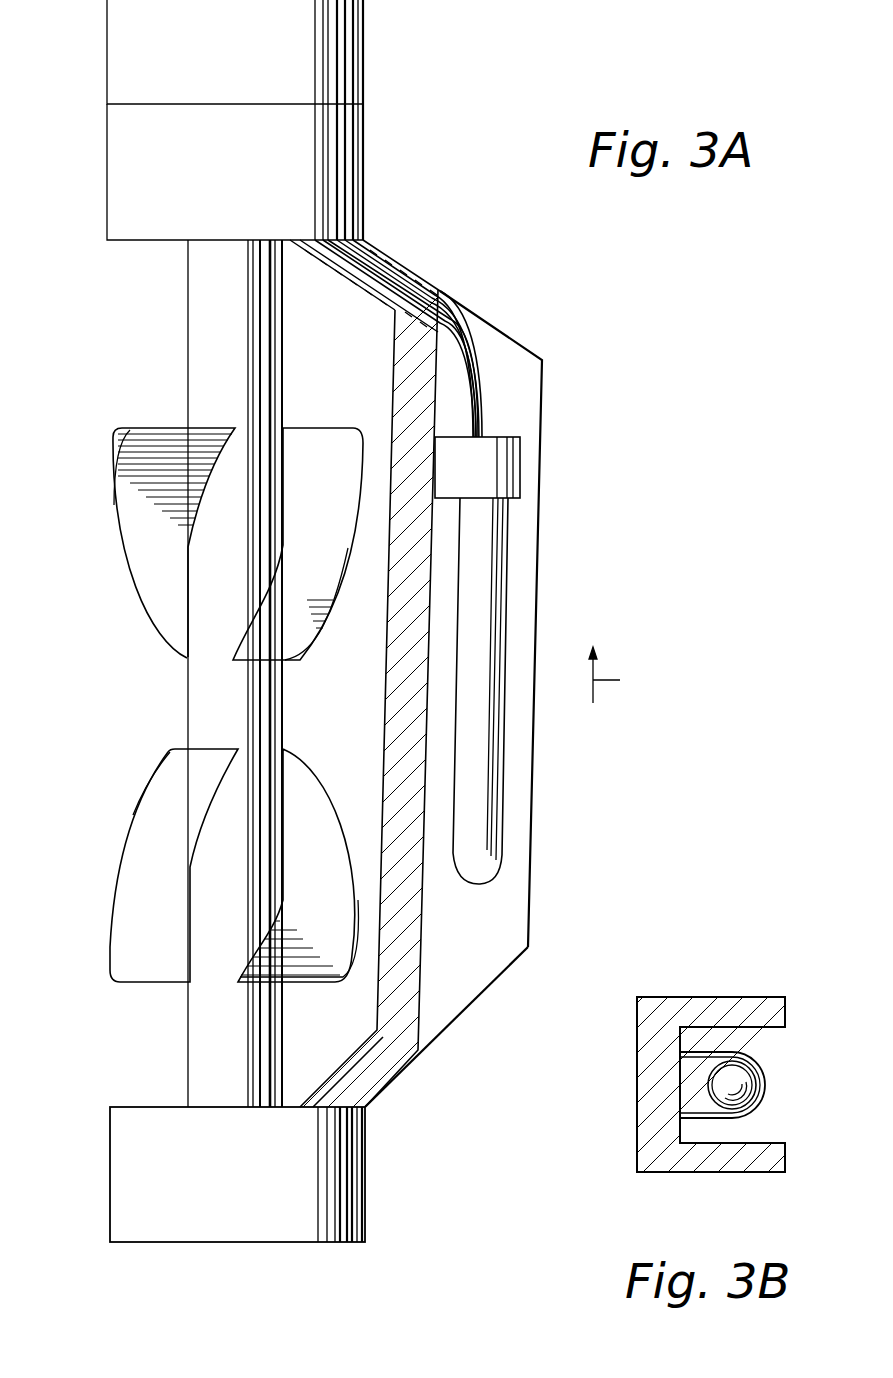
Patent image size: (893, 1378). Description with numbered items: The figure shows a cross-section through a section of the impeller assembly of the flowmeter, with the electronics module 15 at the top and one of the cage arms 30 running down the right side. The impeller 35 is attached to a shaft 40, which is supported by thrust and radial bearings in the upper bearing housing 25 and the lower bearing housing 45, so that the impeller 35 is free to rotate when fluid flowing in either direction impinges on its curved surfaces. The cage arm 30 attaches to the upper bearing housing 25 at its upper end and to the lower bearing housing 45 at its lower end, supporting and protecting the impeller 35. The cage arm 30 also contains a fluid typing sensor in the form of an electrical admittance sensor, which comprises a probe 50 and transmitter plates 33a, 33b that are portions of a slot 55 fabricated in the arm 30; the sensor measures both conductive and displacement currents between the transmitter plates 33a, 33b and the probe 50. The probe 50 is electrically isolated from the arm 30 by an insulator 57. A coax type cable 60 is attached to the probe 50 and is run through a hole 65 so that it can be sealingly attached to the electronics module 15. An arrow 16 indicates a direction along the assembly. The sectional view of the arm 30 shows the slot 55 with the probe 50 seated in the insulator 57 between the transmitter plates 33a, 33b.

In FIG. 3A, the electronics module 15 is at (114, 43).
In FIG. 3A, the upper bearing housing 25 is at (114, 171).
In FIG. 3A, the lower bearing housing 45 is at (117, 1175).
In FIG. 3A, the shaft 40 is at (197, 1040).
In FIG. 3A, the impeller 35 is at (127, 881).
In FIG. 3A, the cage arm 30 is at (388, 709).
In FIG. 3B, the cage arm 30 is at (637, 1075).
In FIG. 3A, the hole 65 is at (377, 280).
In FIG. 3A, the coax type cable 60 is at (465, 337).
In FIG. 3A, the insulator 57 is at (518, 470).
In FIG. 3B, the insulator 57 is at (762, 1102).
In FIG. 3A, the probe 50 is at (495, 773).
In FIG. 3B, the probe 50 is at (740, 1077).
In FIG. 3A, the transmitter plate 33a is at (538, 578).
In FIG. 3B, the transmitter plate 33a is at (738, 1172).
In FIG. 3B, the transmitter plate 33b is at (733, 998).
In FIG. 3A, the channel / slot 55 is at (510, 917).
In FIG. 3B, the channel / slot 55 is at (780, 1130).
In FIG. 3A, the direction arrow 16 is at (622, 675).